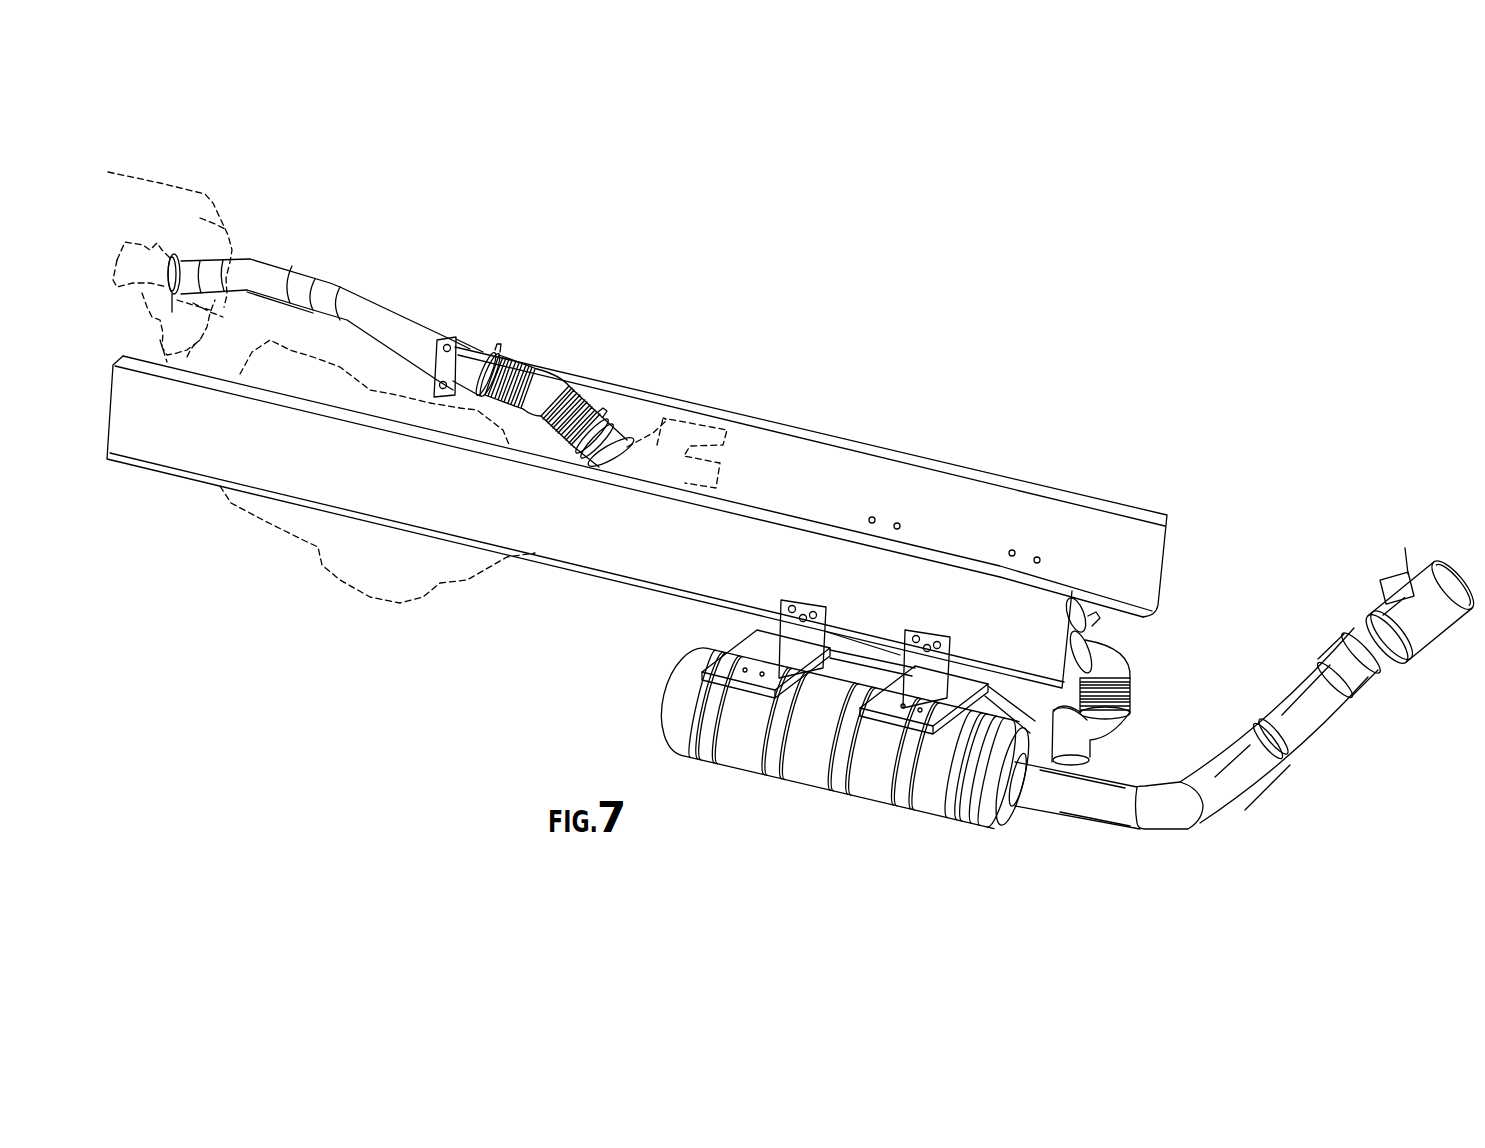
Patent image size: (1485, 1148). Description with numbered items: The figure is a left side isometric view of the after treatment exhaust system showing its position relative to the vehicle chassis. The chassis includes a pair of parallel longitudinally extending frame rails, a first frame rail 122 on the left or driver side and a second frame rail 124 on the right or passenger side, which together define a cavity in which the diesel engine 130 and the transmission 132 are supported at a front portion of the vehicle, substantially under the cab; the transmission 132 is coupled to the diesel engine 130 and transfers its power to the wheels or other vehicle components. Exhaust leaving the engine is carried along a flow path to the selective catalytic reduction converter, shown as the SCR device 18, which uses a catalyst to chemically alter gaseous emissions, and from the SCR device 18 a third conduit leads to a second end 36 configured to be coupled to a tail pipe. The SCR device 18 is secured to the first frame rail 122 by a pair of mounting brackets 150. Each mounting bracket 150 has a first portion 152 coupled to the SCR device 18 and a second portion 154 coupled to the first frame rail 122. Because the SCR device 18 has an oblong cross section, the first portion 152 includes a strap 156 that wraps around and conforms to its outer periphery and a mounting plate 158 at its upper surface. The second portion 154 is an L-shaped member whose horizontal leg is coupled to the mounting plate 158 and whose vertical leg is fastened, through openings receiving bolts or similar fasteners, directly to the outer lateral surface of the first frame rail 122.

The selective catalytic reduction converter (SCR) device 18 is at (815, 773).
The second end of third conduit 36 is at (1388, 655).
The first frame rail 122 is at (157, 450).
The second frame rail 124 is at (825, 430).
The diesel engine 130 is at (142, 208).
The transmission 132 is at (385, 598).
The mounting bracket 150 is at (828, 700).
The first portion 152 is at (694, 718).
The second portion 154 is at (772, 589).
The strap 156 is at (712, 757).
The mounting plate 158 is at (732, 660).